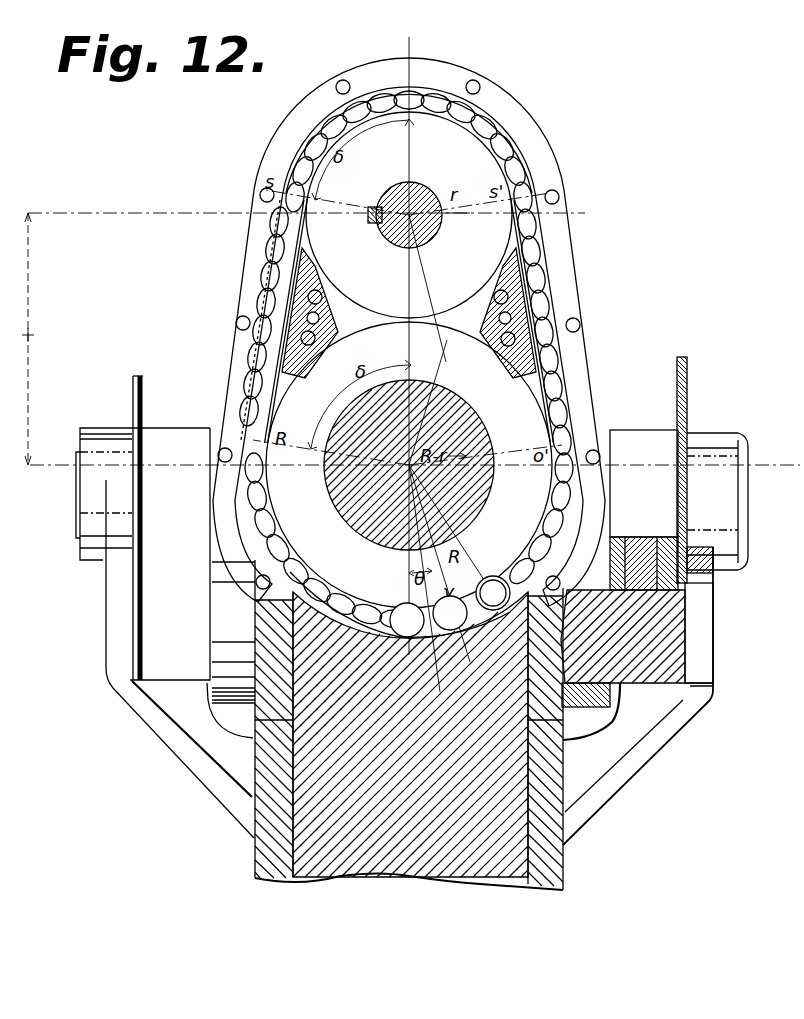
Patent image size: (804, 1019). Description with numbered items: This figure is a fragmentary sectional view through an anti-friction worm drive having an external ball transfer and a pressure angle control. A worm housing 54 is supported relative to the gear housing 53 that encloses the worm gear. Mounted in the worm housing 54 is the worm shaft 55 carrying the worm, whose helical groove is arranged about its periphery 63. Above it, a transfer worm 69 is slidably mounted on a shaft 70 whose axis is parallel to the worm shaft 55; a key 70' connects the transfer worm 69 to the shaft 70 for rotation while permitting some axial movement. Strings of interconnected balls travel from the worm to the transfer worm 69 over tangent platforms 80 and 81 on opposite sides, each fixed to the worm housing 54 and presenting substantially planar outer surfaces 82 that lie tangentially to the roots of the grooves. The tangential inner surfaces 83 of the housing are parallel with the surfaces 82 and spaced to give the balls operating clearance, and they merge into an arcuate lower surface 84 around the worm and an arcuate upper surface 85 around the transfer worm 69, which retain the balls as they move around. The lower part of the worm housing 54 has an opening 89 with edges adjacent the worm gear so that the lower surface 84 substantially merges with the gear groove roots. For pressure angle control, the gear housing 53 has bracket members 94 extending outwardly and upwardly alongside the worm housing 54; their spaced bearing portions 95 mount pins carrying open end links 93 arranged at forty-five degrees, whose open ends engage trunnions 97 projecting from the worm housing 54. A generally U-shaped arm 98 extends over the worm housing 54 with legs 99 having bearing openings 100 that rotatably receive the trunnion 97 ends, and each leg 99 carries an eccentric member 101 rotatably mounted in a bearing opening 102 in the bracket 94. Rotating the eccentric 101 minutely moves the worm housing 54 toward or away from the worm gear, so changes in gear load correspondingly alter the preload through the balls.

The housing 53 is at (558, 860).
The worm housing 54 is at (558, 220).
The worm shaft 55 is at (352, 530).
The periphery 63 is at (538, 371).
The transfer worm 69 is at (446, 308).
The shaft 70 is at (412, 207).
The key 70' is at (361, 231).
The tangent platform 80 is at (333, 338).
The tangent platform 81 is at (482, 334).
The outer surfaces 82 is at (285, 376).
The tangential inner surfaces 83 is at (262, 300).
The arcuate lower surface 84 is at (412, 592).
The arcuate upper surface 85 is at (372, 87).
The opening 89 is at (290, 654).
The open end links 93 is at (647, 440).
The bracket members 94 is at (672, 743).
The bearing portions 95 is at (84, 440).
The trunnions 97 is at (628, 683).
The U-shaped arm 98 is at (688, 366).
The legs 99 is at (689, 413).
The bearing openings 100 is at (682, 688).
The eccentric member 101 is at (702, 596).
The bearing opening 102 is at (700, 688).